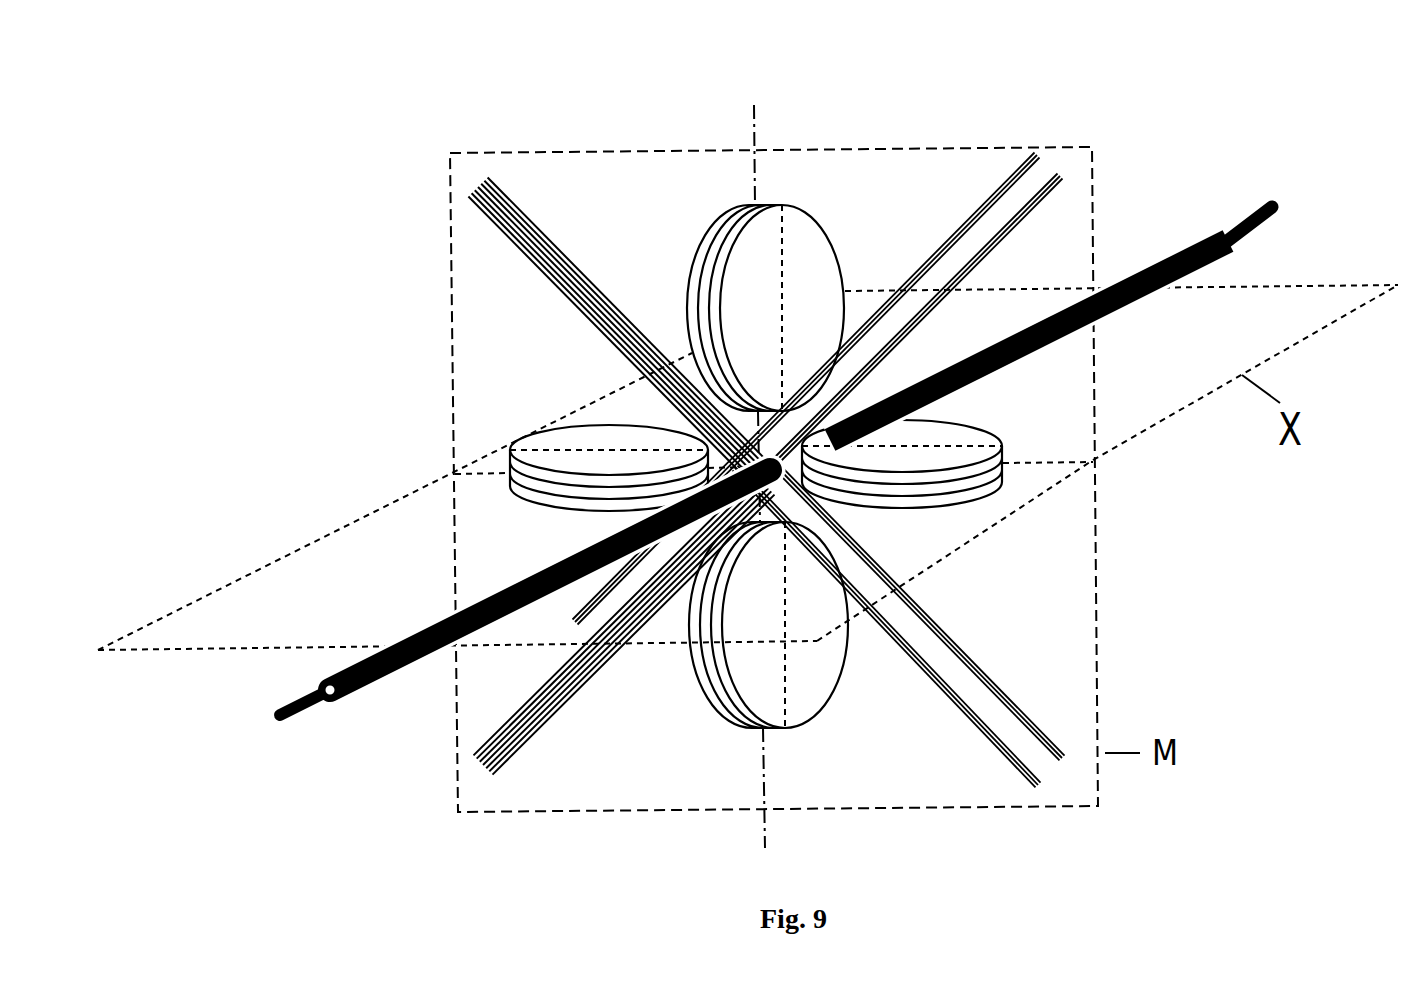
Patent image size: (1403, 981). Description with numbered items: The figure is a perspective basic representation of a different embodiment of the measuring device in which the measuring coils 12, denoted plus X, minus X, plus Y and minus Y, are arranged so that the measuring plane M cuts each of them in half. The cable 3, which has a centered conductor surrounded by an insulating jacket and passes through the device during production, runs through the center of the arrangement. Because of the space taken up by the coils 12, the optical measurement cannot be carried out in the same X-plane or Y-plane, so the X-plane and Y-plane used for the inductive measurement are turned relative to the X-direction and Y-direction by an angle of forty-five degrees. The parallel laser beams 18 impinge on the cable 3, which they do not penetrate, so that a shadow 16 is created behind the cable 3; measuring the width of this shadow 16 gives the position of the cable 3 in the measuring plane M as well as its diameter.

The cable 3 is at (776, 537).
The measuring coils 12 is at (932, 835).
The shadow 16 is at (998, 215).
The laser beams 18 is at (525, 730).